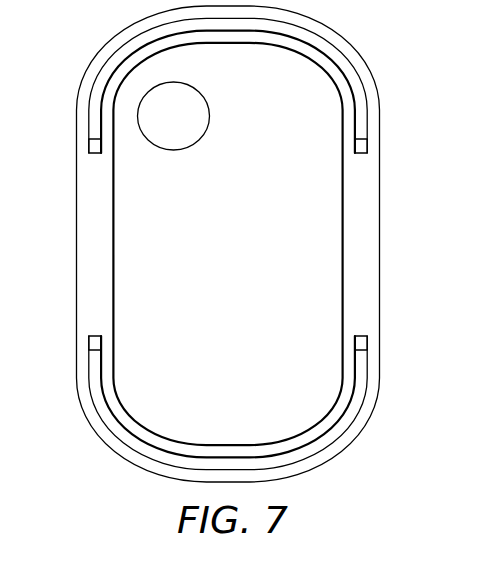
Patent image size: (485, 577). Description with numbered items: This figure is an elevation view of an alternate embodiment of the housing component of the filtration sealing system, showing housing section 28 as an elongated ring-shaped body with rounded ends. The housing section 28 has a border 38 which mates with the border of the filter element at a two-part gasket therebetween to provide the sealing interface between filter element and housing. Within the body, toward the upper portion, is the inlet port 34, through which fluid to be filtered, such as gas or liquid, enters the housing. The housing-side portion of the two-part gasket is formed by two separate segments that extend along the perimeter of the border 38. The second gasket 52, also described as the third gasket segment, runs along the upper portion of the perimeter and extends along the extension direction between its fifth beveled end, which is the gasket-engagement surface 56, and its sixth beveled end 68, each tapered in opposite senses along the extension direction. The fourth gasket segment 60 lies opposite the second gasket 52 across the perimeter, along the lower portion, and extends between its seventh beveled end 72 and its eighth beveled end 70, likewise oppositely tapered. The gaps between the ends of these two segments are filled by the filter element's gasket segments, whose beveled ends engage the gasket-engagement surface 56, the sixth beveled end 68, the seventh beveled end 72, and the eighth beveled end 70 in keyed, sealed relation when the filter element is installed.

The housing section 28 is at (380, 283).
The border 38 is at (368, 200).
The second gasket 52 is at (358, 96).
The fourth gasket segment 60 is at (345, 413).
The gasket-engagement surface 56 is at (92, 147).
The sixth beveled end 68 is at (362, 147).
The eighth beveled end 70 is at (92, 343).
The seventh beveled end 72 is at (367, 343).
The inlet port 34 is at (197, 117).